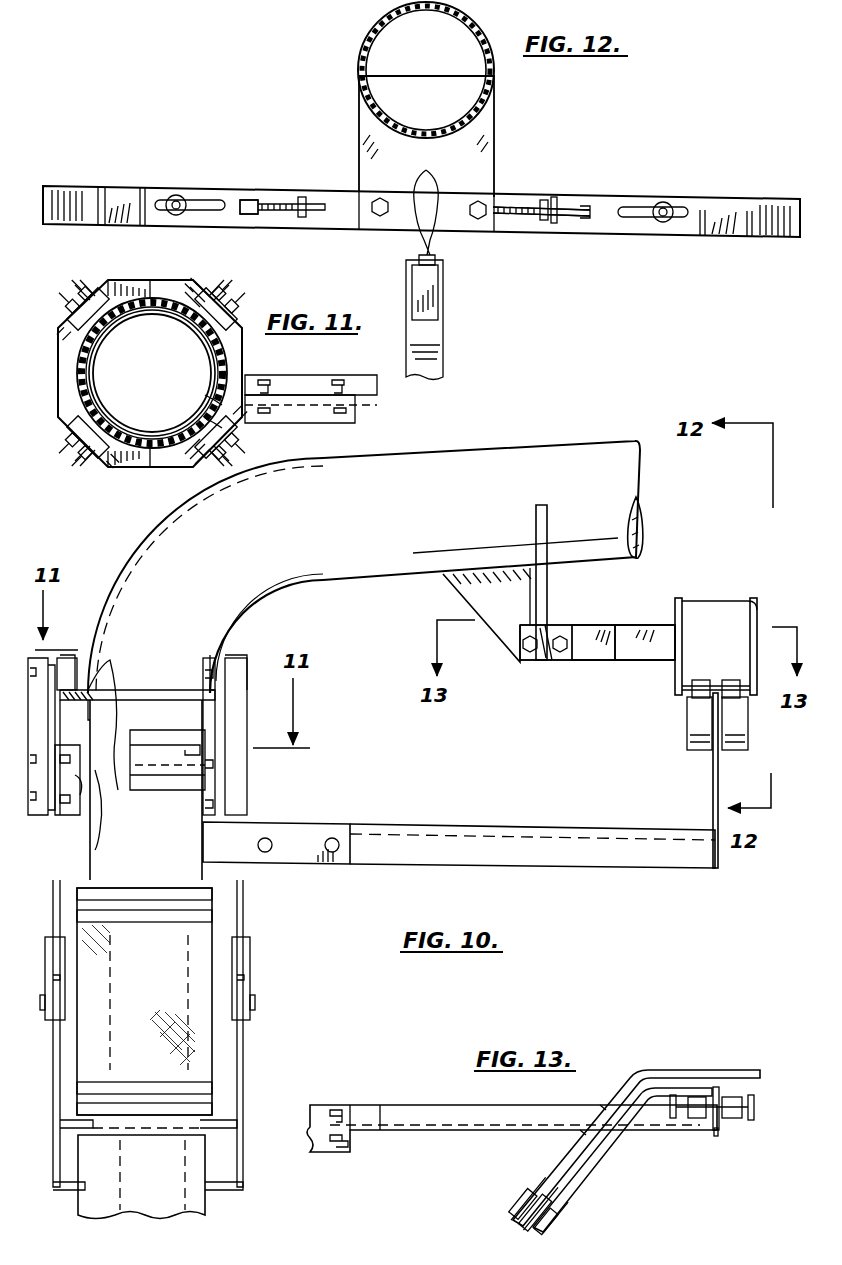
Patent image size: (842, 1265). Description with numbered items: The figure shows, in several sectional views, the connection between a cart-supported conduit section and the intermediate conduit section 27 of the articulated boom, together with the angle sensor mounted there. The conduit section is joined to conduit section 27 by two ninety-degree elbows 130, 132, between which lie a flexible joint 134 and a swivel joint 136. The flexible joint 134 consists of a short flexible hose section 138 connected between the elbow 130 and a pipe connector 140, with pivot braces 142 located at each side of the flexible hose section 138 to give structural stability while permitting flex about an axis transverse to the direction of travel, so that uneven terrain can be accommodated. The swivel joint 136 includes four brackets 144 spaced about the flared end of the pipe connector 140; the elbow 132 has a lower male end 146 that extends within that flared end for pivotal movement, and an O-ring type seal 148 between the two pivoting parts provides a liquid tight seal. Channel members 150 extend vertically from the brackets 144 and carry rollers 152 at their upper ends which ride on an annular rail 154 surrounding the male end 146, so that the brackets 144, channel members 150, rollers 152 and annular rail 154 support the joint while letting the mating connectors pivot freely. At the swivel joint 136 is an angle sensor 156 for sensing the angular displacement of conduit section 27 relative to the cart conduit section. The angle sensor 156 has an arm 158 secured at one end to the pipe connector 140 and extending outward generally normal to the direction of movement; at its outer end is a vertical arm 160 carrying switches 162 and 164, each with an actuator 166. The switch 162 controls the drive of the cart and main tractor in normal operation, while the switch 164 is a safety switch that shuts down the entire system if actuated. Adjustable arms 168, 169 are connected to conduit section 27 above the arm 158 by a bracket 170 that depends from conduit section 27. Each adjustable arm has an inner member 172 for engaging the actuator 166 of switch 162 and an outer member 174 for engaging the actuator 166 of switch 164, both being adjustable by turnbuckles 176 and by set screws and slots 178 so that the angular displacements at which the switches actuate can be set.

In FIG. 12, the intermediate conduit section 27 is at (366, 40).
In FIG. 10, the intermediate conduit section 27 is at (578, 445).
In FIG. 10, the elbow 130 is at (200, 1212).
In FIG. 11, the elbow 132 is at (95, 378).
In FIG. 10, the elbow 132 is at (288, 583).
In FIG. 10, the flexible joint 134 is at (262, 972).
In FIG. 10, the swivel joint 136 is at (262, 790).
In FIG. 10, the flexible hose section 138 is at (195, 940).
In FIG. 11, the pipe connector 140 is at (232, 360).
In FIG. 10, the pipe connector 140 is at (215, 868).
In FIG. 10, the pivot braces 142 is at (38, 1015).
In FIG. 11, the brackets 144 is at (196, 285).
In FIG. 10, the brackets 144 is at (66, 815).
In FIG. 11, the male end 146 is at (123, 335).
In FIG. 10, the male end 146 is at (120, 695).
In FIG. 11, the O-ring type seal 148 is at (210, 412).
In FIG. 10, the O-ring type seal 148 is at (100, 745).
In FIG. 11, the channel members 150 is at (82, 270).
In FIG. 10, the channel members 150 is at (235, 660).
In FIG. 11, the rollers 152 is at (110, 286).
In FIG. 10, the rollers 152 is at (70, 660).
In FIG. 11, the annular rail 154 is at (150, 468).
In FIG. 10, the annular rail 154 is at (95, 690).
In FIG. 12, the angle sensor 156 is at (680, 135).
In FIG. 10, the angle sensor 156 is at (580, 735).
In FIG. 11, the arm 158 is at (370, 410).
In FIG. 10, the arm 158 is at (540, 868).
In FIG. 13, the arm 158 is at (418, 1100).
In FIG. 12, the vertical arm 160 is at (443, 350).
In FIG. 10, the vertical arm 160 is at (713, 783).
In FIG. 13, the vertical arm 160 is at (716, 1136).
In FIG. 10, the switch 162 is at (687, 723).
In FIG. 13, the switch 162 is at (698, 1118).
In FIG. 12, the switch 164 is at (438, 292).
In FIG. 10, the switch 164 is at (748, 722).
In FIG. 13, the switch 164 is at (732, 1118).
In FIG. 12, the actuator 166 is at (436, 182).
In FIG. 10, the actuator 166 is at (682, 605).
In FIG. 13, the actuator 166 is at (754, 1110).
In FIG. 12, the adjustable arm 168 is at (246, 185).
In FIG. 12, the adjustable arm 169 is at (606, 188).
In FIG. 10, the adjustable arm 169 is at (613, 620).
In FIG. 13, the adjustable arm 169 is at (540, 1156).
In FIG. 12, the bracket 170 is at (359, 125).
In FIG. 10, the bracket 170 is at (547, 595).
In FIG. 12, the inner member 172 is at (128, 195).
In FIG. 10, the inner member 172 is at (598, 662).
In FIG. 13, the inner member 172 is at (660, 1088).
In FIG. 12, the outer member 174 is at (78, 195).
In FIG. 10, the outer member 174 is at (645, 662).
In FIG. 13, the outer member 174 is at (722, 1070).
In FIG. 12, the turnbuckles 176 is at (300, 217).
In FIG. 12, the set screws and slots 178 is at (200, 198).